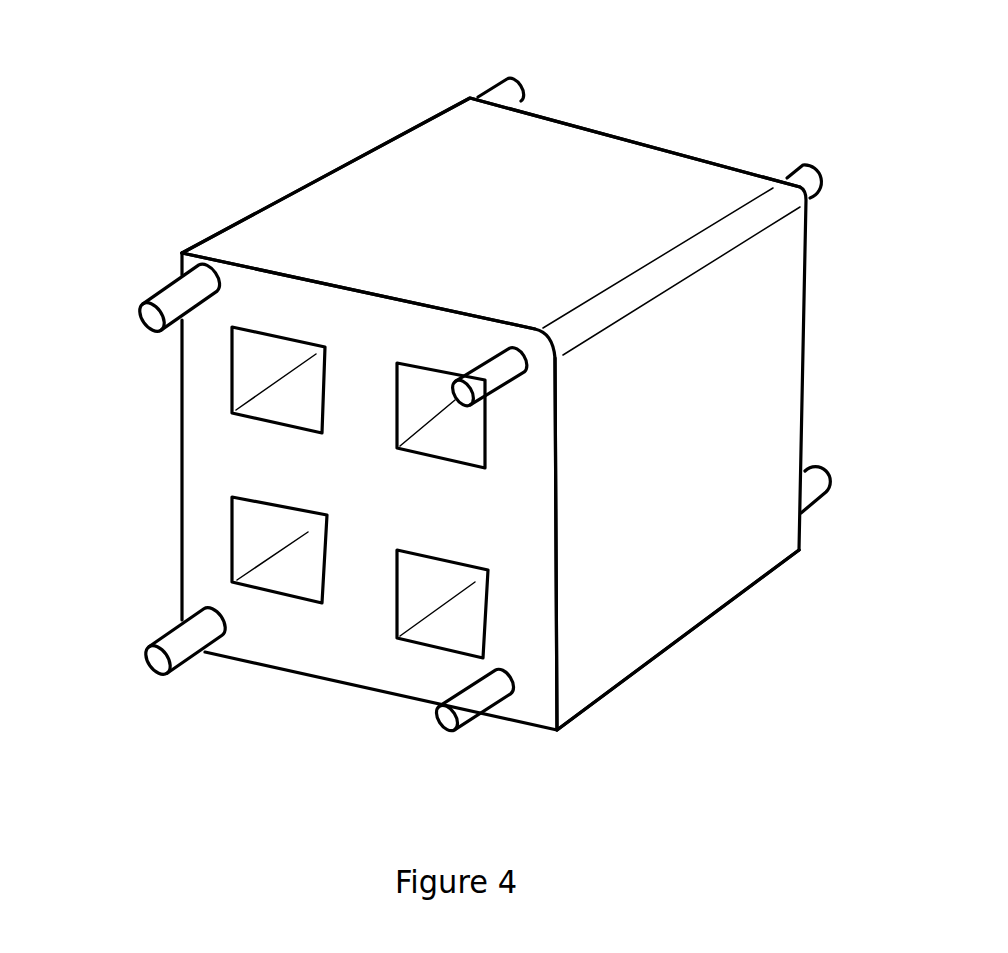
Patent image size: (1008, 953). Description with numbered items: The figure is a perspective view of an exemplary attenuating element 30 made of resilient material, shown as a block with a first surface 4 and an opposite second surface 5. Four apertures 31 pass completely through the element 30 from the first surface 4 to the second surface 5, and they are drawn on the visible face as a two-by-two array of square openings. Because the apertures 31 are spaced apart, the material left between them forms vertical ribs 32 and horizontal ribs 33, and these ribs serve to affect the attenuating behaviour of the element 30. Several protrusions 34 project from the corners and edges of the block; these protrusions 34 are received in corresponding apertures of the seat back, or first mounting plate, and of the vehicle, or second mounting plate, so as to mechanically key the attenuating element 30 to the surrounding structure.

The first surface 4 is at (730, 163).
The second surface 5 is at (205, 372).
The attenuating element 30 is at (542, 155).
The apertures 31 is at (438, 627).
The vertical ribs 32 is at (345, 618).
The horizontal ribs 33 is at (455, 530).
The protrusions 34 is at (172, 282).